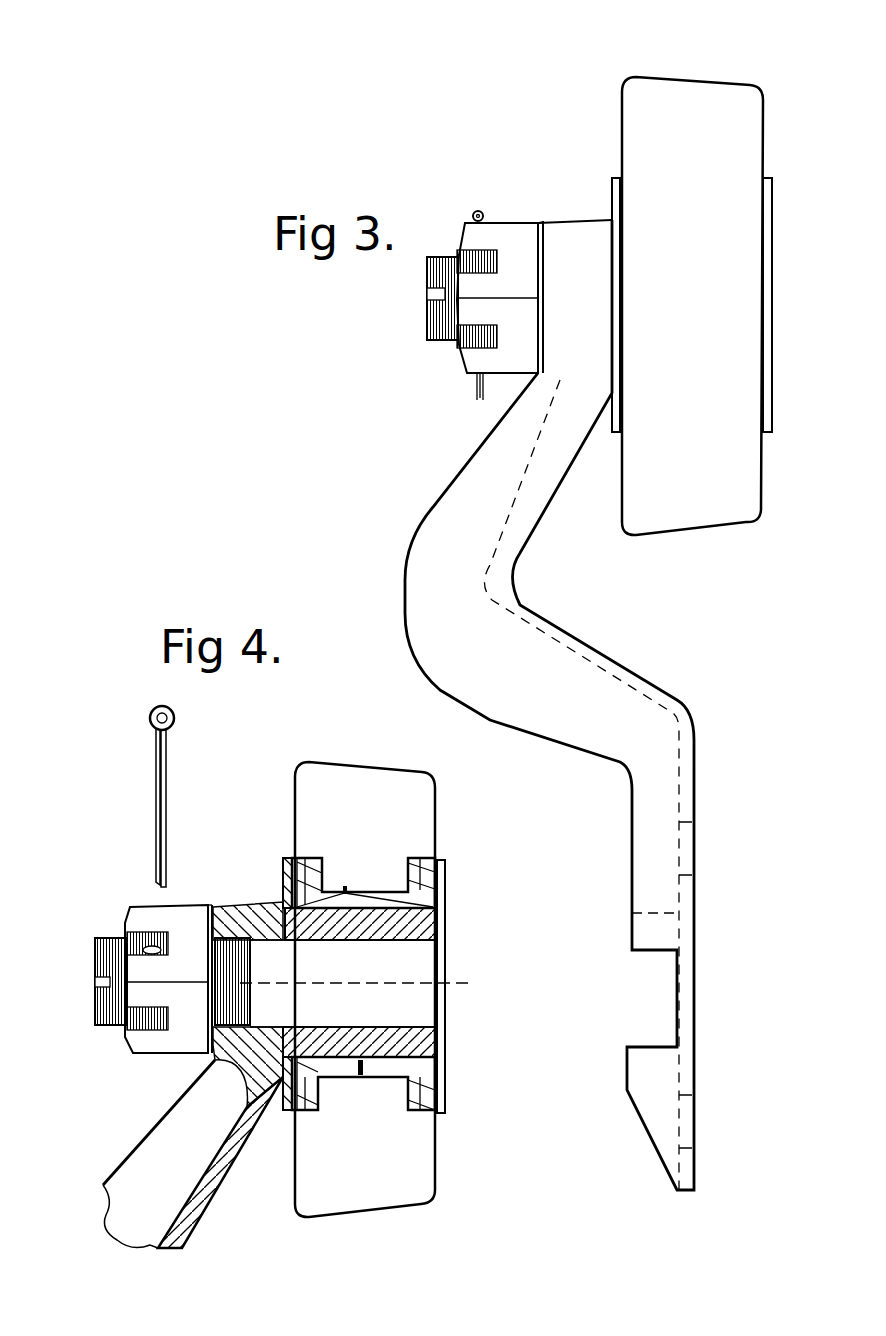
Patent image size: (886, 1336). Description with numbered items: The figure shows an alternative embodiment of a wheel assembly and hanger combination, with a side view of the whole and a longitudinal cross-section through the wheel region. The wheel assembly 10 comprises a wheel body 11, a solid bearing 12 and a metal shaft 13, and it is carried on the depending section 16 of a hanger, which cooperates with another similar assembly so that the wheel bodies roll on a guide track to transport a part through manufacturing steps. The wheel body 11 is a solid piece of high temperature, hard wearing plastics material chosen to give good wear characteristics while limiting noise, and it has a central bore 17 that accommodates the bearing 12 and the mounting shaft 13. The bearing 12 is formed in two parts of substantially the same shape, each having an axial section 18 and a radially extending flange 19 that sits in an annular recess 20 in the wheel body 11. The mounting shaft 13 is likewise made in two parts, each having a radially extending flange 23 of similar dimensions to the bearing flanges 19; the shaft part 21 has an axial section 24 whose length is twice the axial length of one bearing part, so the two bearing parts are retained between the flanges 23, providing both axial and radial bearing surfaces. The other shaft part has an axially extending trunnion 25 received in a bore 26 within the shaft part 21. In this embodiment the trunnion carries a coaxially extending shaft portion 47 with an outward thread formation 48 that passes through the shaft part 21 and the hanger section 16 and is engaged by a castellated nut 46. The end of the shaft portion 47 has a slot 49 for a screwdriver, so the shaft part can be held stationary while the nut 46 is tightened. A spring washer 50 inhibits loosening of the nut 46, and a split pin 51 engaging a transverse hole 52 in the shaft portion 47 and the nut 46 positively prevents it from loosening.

In FIG. 3, the wheel assembly 10 is at (786, 345).
In FIG. 3, the wheel body 11 is at (700, 145).
In FIG. 4, the wheel body 11 is at (397, 800).
In FIG. 4, the solid bearing 12 is at (346, 880).
In FIG. 4, the metal shaft 13 is at (468, 968).
In FIG. 3, the depending section 16 is at (690, 775).
In FIG. 4, the depending section 16 is at (227, 1173).
In FIG. 4, the central bore 17 is at (430, 1058).
In FIG. 4, the axial section 18 is at (388, 892).
In FIG. 4, the radially extending flange 19 is at (323, 873).
In FIG. 4, the annular recess 20 is at (413, 1108).
In FIG. 4, the shaft part 21 is at (355, 1045).
In FIG. 3, the radially extending flange 23 is at (612, 180).
In FIG. 4, the radially extending flange 23 is at (287, 858).
In FIG. 4, the axial section 24 is at (400, 1067).
In FIG. 4, the trunnion 25 is at (405, 995).
In FIG. 4, the bore 26 is at (402, 908).
In FIG. 3, the castellated nut 46 is at (516, 258).
In FIG. 4, the castellated nut 46 is at (163, 1045).
In FIG. 4, the shaft portion 47 is at (270, 955).
In FIG. 3, the thread formation 48 is at (448, 342).
In FIG. 4, the thread formation 48 is at (100, 1035).
In FIG. 3, the slot 49 is at (427, 296).
In FIG. 4, the slot 49 is at (97, 985).
In FIG. 3, the spring washer 50 is at (543, 250).
In FIG. 4, the spring washer 50 is at (211, 905).
In FIG. 4, the split pin 51 is at (158, 778).
In FIG. 4, the transverse hole 52 is at (142, 946).